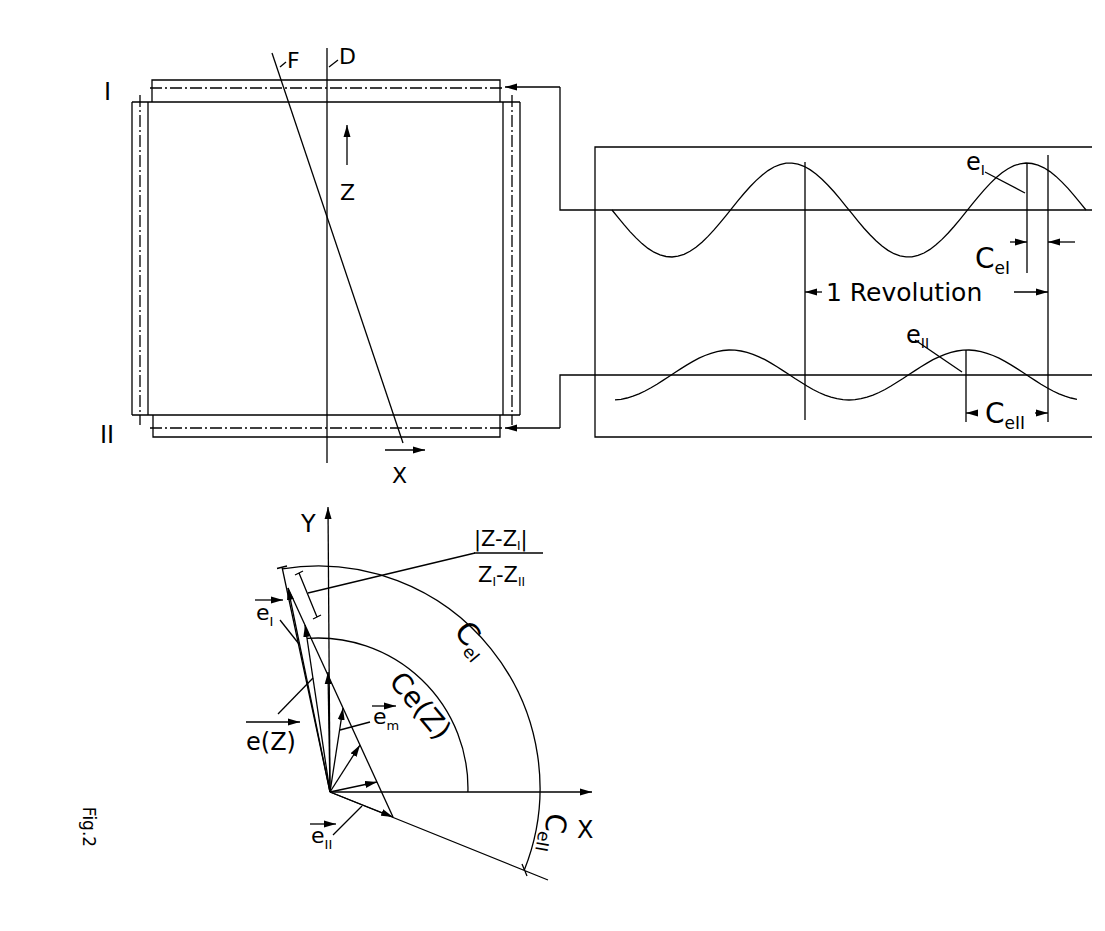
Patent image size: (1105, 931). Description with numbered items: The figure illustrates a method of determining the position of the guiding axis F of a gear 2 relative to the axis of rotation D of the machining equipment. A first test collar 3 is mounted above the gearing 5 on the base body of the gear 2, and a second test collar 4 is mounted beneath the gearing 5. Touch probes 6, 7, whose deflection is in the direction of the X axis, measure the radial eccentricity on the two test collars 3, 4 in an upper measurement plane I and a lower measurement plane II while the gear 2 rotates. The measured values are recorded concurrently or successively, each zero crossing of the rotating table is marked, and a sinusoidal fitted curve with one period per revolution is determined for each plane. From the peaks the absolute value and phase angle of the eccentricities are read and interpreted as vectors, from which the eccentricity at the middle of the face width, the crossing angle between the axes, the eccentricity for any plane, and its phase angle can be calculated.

The gear 2 is at (475, 232).
The first test collar 3 is at (382, 93).
The second test collar 4 is at (427, 422).
The gearing 5 is at (513, 280).
The touch probe 6 is at (522, 84).
The touch probe 7 is at (523, 430).